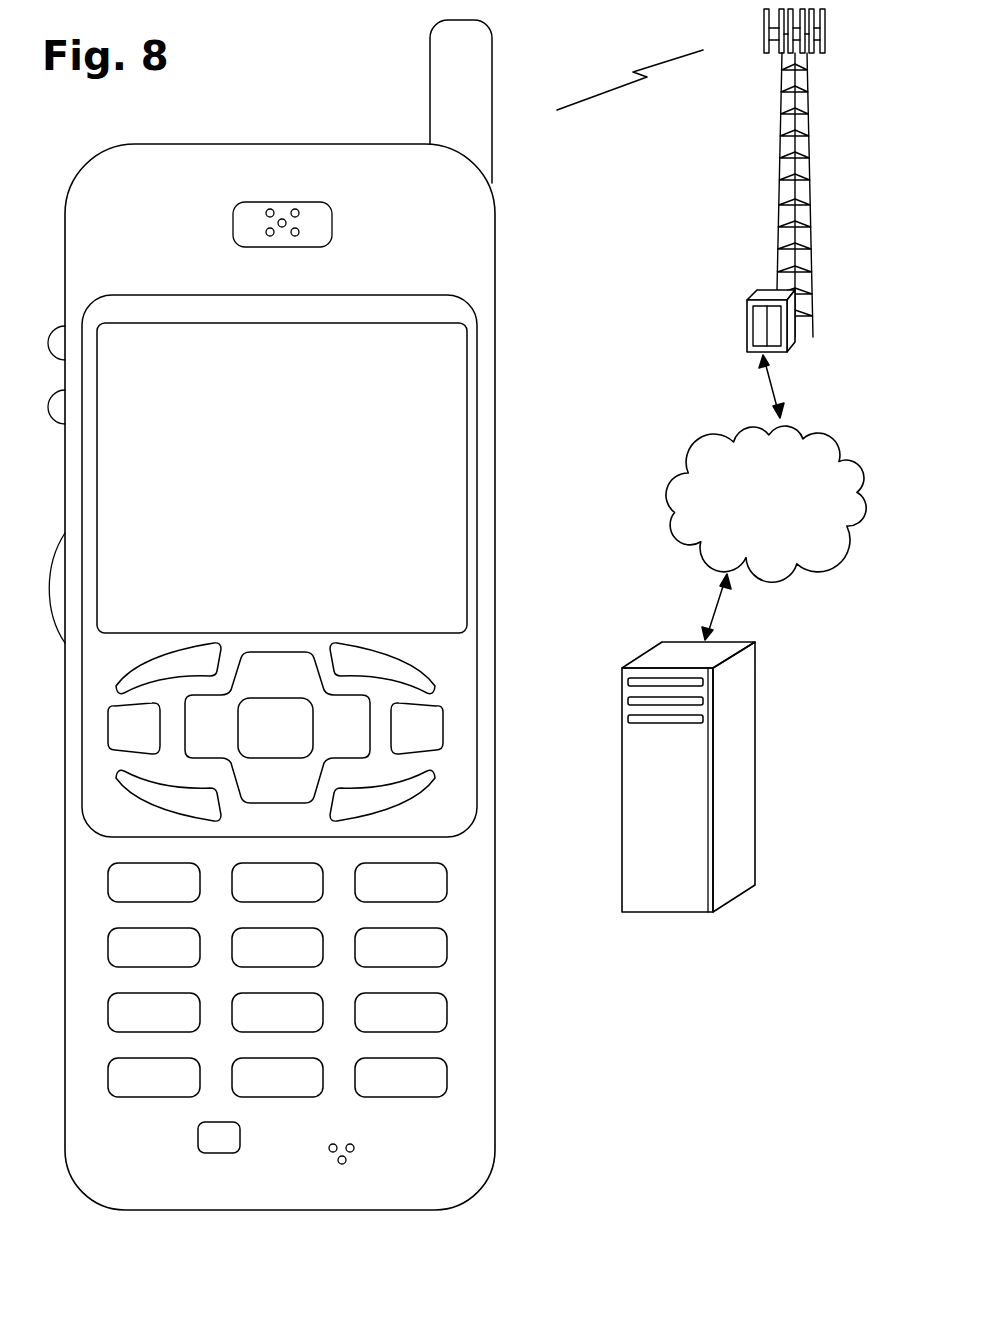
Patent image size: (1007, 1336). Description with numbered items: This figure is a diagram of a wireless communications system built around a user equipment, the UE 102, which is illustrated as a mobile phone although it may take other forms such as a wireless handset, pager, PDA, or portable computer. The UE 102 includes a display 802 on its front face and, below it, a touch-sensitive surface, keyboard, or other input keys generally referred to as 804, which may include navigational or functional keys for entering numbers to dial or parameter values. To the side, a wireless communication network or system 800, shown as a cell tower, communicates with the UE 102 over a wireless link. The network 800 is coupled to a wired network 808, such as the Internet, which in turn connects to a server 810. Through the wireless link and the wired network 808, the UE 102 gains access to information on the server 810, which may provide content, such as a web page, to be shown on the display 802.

The UE 102 is at (108, 1207).
The wireless communication network or system 800 is at (782, 195).
The display 802 is at (468, 339).
The input keys 804 is at (504, 644).
The wired network 808 is at (681, 549).
The server 810 is at (668, 912).